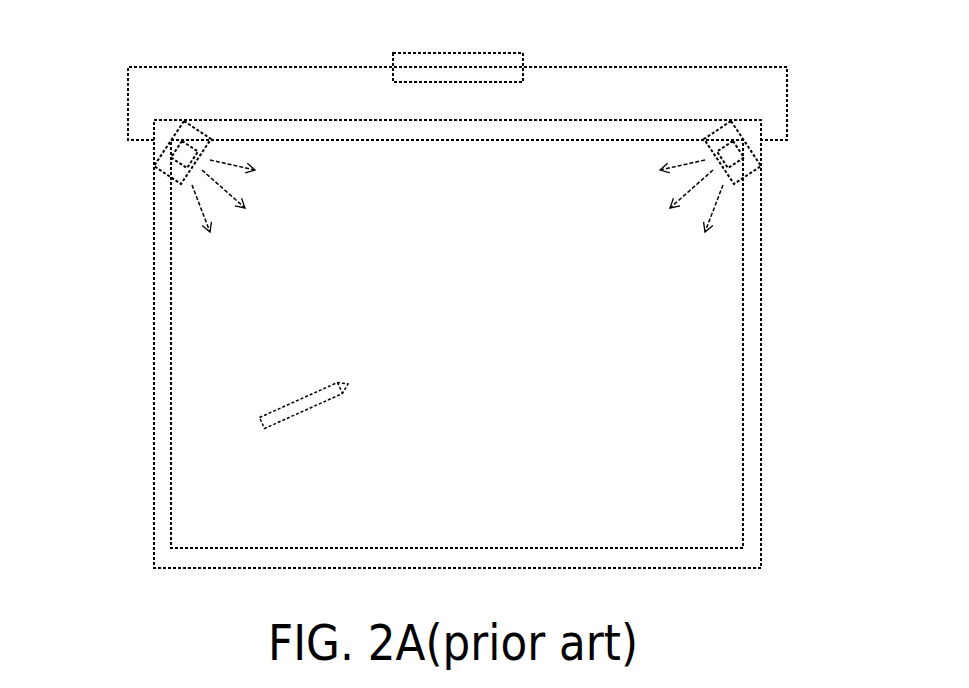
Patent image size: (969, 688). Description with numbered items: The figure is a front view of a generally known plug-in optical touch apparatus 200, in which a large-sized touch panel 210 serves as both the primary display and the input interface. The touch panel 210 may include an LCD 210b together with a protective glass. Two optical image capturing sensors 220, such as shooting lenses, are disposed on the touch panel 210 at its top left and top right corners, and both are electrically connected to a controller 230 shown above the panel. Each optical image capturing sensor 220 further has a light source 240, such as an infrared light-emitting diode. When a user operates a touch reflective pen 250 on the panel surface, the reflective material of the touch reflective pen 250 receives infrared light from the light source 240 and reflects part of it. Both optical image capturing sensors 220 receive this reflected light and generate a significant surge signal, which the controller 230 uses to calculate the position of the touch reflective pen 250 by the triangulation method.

The plug-in optical touch apparatus 200 is at (60, 32).
The touch panel 210 is at (495, 366).
The LCD 210b is at (657, 557).
The optical image capturing sensor 220 is at (752, 155).
The controller 230 is at (458, 67).
The light source 240 is at (741, 176).
The touch reflective pen 250 is at (250, 428).